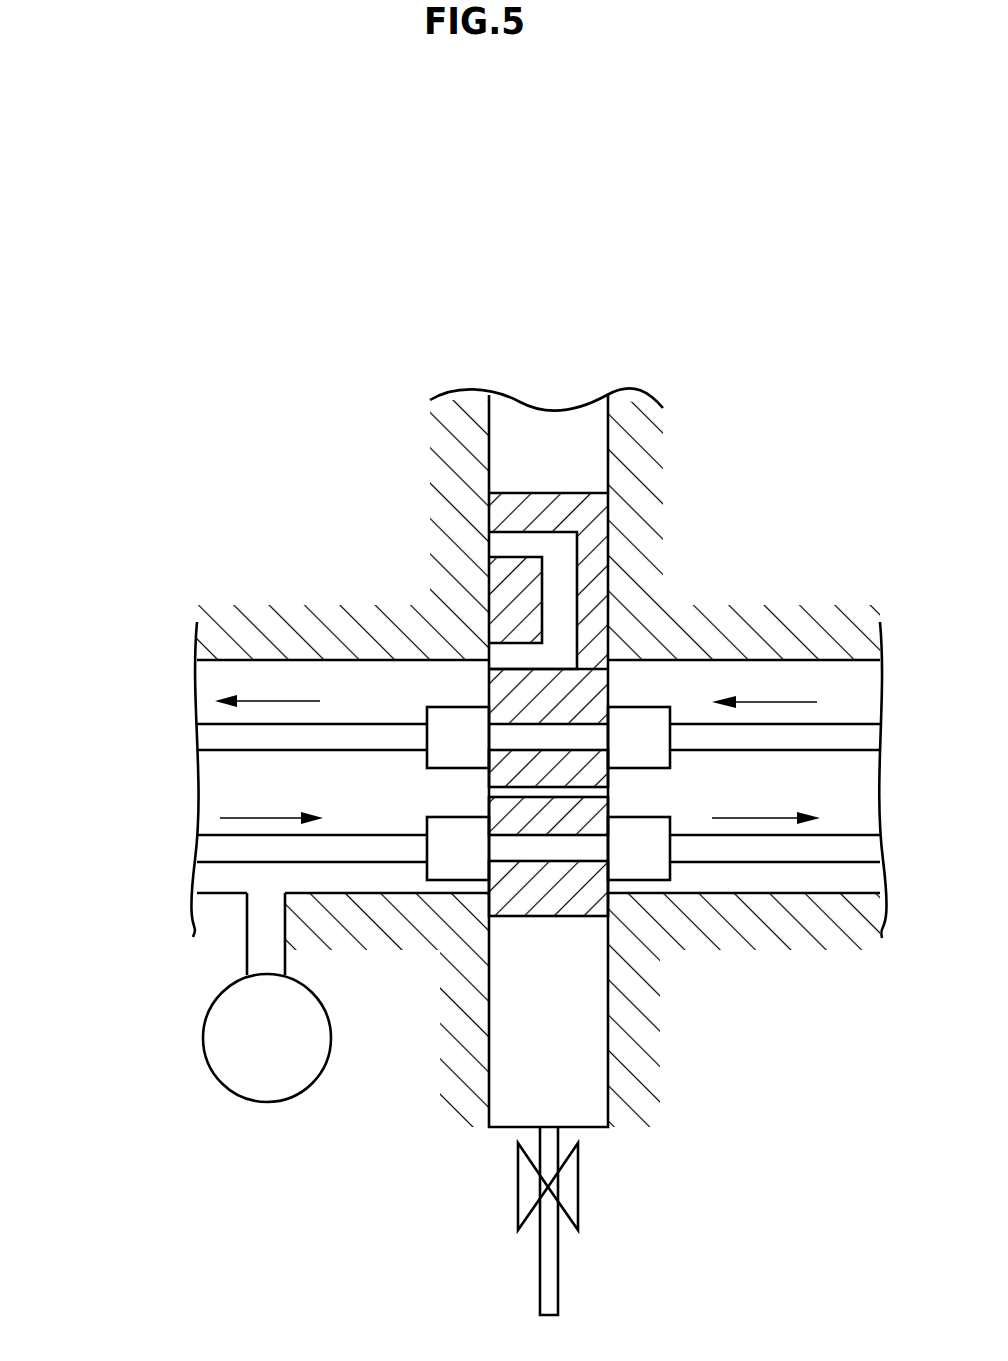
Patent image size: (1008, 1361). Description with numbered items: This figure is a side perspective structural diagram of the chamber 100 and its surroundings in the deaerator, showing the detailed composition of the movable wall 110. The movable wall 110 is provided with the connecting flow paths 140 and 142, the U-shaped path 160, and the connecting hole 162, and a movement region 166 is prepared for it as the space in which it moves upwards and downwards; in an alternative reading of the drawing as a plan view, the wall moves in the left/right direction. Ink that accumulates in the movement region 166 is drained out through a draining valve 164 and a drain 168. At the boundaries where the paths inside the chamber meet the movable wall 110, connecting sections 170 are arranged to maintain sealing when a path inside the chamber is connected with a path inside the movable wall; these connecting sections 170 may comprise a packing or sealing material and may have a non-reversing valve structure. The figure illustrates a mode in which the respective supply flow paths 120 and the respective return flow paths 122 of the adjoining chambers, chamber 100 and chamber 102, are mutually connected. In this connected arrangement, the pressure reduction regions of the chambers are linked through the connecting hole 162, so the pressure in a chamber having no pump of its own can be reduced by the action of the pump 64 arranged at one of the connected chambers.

The pump 64 is at (272, 1105).
The chamber 100 is at (263, 680).
The chamber 102 is at (843, 680).
The movable wall 110 is at (545, 490).
The supply flow paths 120 is at (217, 850).
The return flow paths 122 is at (217, 738).
The connecting flow path 140 is at (587, 847).
The connecting flow path 142 is at (592, 738).
The U-shaped path 160 is at (560, 545).
The connecting hole 162 is at (600, 790).
The draining valve 164 is at (573, 1187).
The movement region 166 is at (593, 1083).
The drain 168 is at (553, 1287).
The connecting sections 170 is at (457, 727).